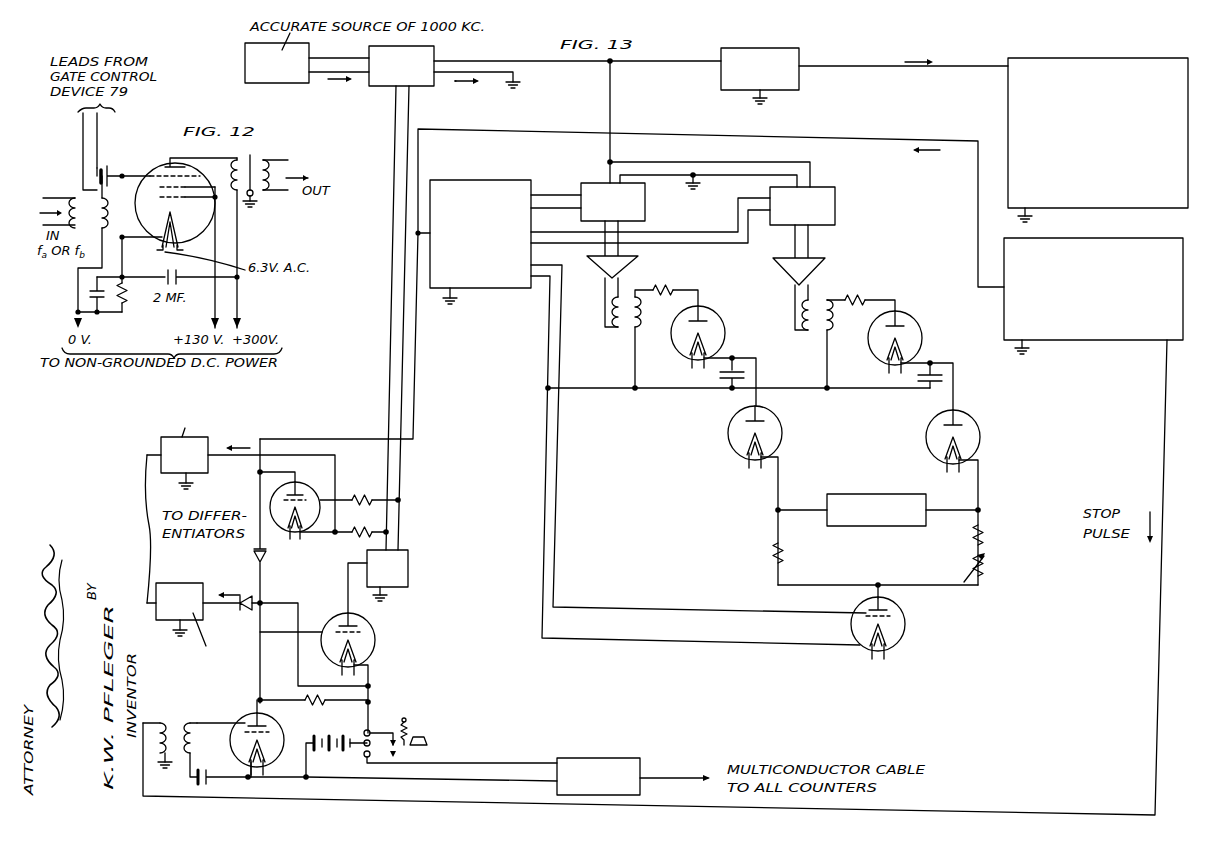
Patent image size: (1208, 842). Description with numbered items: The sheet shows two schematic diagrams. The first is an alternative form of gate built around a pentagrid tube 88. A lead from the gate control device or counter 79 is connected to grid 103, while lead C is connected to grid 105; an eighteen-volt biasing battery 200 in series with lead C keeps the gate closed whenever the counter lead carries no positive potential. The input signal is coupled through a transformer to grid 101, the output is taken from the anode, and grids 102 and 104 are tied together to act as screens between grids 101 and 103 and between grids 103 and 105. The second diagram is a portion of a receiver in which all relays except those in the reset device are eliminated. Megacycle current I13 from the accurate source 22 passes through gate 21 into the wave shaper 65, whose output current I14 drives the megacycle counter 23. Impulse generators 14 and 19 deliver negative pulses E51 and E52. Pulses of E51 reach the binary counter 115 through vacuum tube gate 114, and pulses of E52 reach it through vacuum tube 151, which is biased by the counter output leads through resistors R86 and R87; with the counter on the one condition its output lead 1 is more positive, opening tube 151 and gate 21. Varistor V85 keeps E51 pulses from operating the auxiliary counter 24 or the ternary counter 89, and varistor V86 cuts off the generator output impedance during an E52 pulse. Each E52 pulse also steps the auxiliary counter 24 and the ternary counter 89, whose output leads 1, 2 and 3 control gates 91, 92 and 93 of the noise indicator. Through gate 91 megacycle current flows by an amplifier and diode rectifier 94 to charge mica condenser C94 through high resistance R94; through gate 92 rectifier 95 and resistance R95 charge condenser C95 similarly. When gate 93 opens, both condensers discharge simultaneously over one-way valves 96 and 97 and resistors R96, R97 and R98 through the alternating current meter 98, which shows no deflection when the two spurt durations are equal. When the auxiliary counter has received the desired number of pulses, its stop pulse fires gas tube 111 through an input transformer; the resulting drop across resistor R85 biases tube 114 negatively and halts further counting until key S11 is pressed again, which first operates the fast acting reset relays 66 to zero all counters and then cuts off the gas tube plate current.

In FIG. 12, the counter 79 is at (80, 132).
In FIG. 12, the lead C is at (99, 128).
In FIG. 12, the biasing battery 200 is at (105, 162).
In FIG. 12, the grid 104 is at (147, 173).
In FIG. 12, the pentagrid tube 88 is at (163, 165).
In FIG. 12, the grid 105 is at (186, 178).
In FIG. 12, the grid 103 is at (196, 207).
In FIG. 12, the grid 101 is at (181, 221).
In FIG. 12, the grid 102 is at (153, 247).
In FIG. 13, the accurate source 22 is at (312, 57).
In FIG. 13, the gate 21 is at (436, 55).
In FIG. 13, the megacycle current I13 is at (463, 92).
In FIG. 13, the current I14 is at (919, 51).
In FIG. 13, the wave shaper 65 is at (787, 92).
In FIG. 13, the megacycle counter 23 is at (1100, 210).
In FIG. 13, the auxiliary binary counter 24 is at (1095, 342).
In FIG. 13, the negative voltage pulse E52 is at (615, 290).
In FIG. 13, the ternary counter 89 is at (470, 178).
In FIG. 13, the output lead 1 is at (554, 190).
In FIG. 13, the ternary counter output lead 2 is at (545, 236).
In FIG. 13, the ternary counter output lead 3 is at (562, 272).
In FIG. 13, the gate 91 is at (646, 204).
In FIG. 13, the gate 92 is at (836, 207).
In FIG. 13, the high resistance R94 is at (662, 291).
In FIG. 13, the resistance R95 is at (856, 298).
In FIG. 13, the diode rectifier 94 is at (718, 316).
In FIG. 13, the diode rectifier 95 is at (915, 323).
In FIG. 13, the mica condenser C94 is at (749, 376).
In FIG. 13, the mica condenser C95 is at (945, 381).
In FIG. 13, the one-way valve 96 is at (728, 432).
In FIG. 13, the one-way valve 97 is at (981, 437).
In FIG. 13, the alternating current meter 98 is at (879, 492).
In FIG. 13, the resistor R96 is at (783, 553).
In FIG. 13, the resistor R97 is at (983, 537).
In FIG. 13, the resistor R98 is at (983, 571).
In FIG. 13, the gate 93 is at (906, 625).
In FIG. 13, the impulse generator 19 is at (208, 468).
In FIG. 13, the impulse generator 14 is at (180, 583).
In FIG. 13, the negative voltage pulse E51 is at (228, 585).
In FIG. 13, the varistor V85 is at (267, 559).
In FIG. 13, the varistor V86 is at (246, 612).
In FIG. 13, the vacuum tube 151 is at (282, 528).
In FIG. 13, the resistor R87 is at (360, 490).
In FIG. 13, the resistor R86 is at (376, 530).
In FIG. 13, the binary counter 115 is at (409, 565).
In FIG. 13, the vacuum tube 114 is at (376, 640).
In FIG. 13, the resistor R85 is at (326, 704).
In FIG. 13, the gas tube 111 is at (271, 756).
In FIG. 13, the key S11 is at (418, 733).
In FIG. 13, the reset relays 66 is at (600, 757).